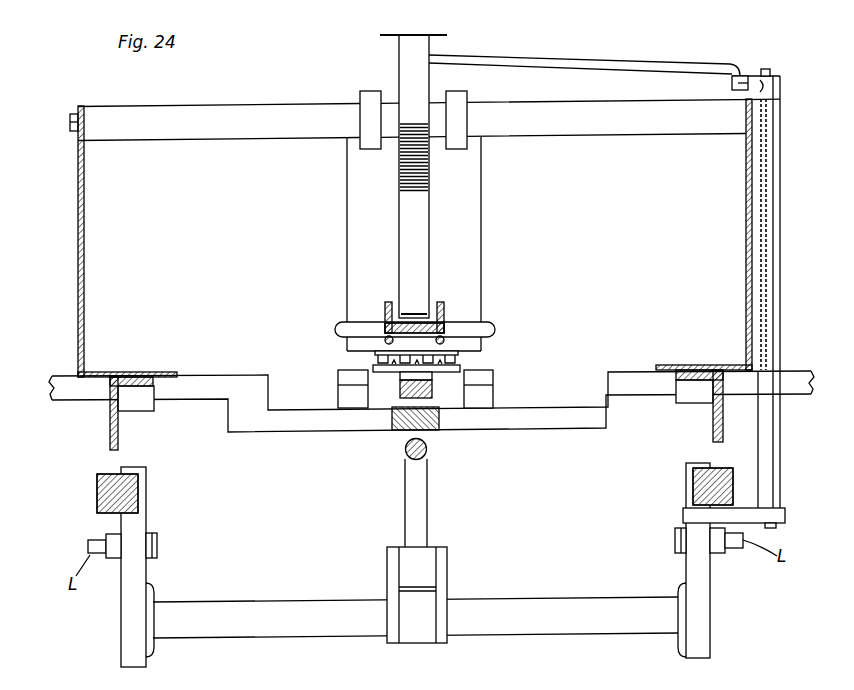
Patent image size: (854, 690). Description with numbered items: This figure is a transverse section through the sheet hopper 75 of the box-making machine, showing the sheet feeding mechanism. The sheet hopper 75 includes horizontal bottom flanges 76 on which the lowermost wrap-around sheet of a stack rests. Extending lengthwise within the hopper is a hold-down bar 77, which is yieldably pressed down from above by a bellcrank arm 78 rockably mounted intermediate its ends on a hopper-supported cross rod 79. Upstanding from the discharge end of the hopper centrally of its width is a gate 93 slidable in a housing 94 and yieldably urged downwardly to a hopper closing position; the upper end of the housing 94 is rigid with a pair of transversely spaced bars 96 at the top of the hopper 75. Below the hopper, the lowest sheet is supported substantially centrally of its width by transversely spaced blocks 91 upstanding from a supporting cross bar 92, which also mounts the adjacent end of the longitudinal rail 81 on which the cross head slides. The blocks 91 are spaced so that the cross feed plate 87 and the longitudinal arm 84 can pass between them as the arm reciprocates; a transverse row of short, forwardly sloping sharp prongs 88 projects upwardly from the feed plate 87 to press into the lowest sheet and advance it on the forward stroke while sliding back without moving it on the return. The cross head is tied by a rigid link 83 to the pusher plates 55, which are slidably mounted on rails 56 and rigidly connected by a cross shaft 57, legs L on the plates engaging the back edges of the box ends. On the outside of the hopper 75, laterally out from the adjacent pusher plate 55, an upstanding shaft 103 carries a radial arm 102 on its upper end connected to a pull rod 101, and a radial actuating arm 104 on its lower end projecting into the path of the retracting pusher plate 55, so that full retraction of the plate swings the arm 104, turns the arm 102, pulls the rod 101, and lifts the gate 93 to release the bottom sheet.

The pusher plates 55 is at (135, 580).
The rails 56 is at (123, 496).
The cross shaft 57 is at (271, 615).
The sheet hopper 75 is at (92, 197).
The bottom flanges 76 is at (128, 376).
The hold-down bar 77 is at (446, 310).
The bellcrank arm 78 is at (407, 226).
The cross rod 79 is at (220, 128).
The longitudinal rail 81 is at (392, 428).
The rigid link 83 is at (421, 513).
The longitudinal arm 84 is at (400, 390).
The cross feed plate 87 is at (460, 366).
The prongs 88 is at (392, 362).
The blocks 91 is at (346, 393).
The cross bar 92 is at (278, 423).
The gate 93 is at (441, 353).
The housing 94 is at (471, 224).
The bars 96 is at (451, 133).
The pull rod 101 is at (548, 62).
The radial arm 102 is at (740, 70).
The upstanding shaft 103 is at (768, 68).
The actuating arm 104 is at (696, 518).